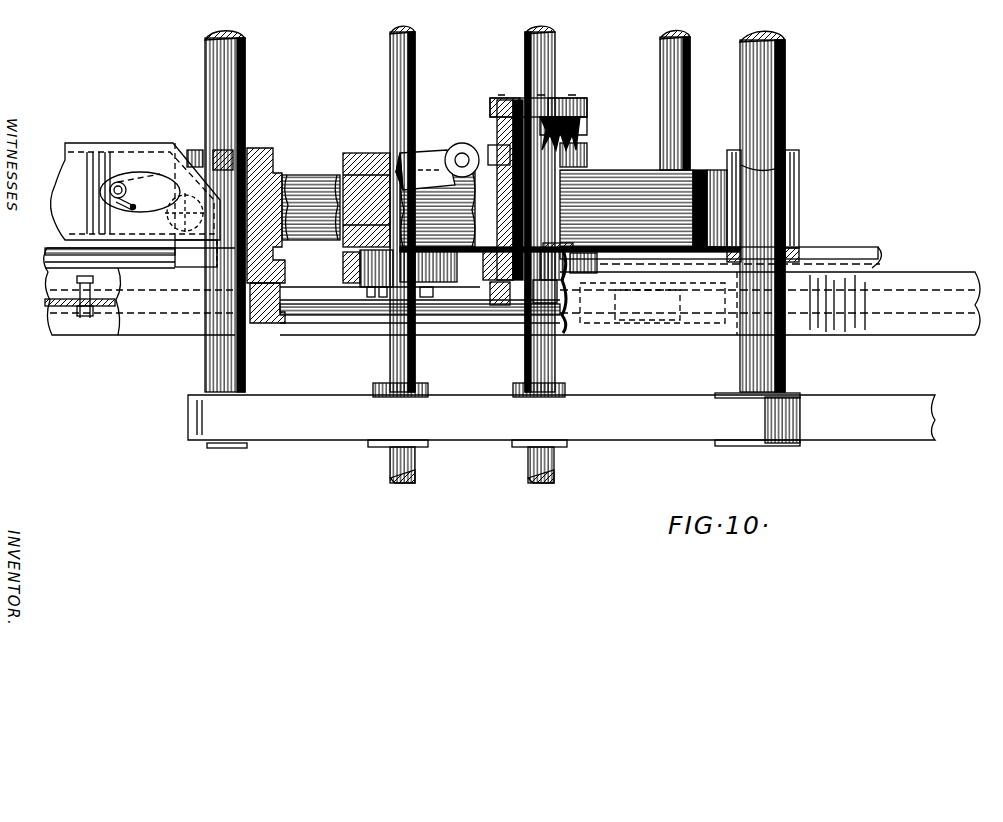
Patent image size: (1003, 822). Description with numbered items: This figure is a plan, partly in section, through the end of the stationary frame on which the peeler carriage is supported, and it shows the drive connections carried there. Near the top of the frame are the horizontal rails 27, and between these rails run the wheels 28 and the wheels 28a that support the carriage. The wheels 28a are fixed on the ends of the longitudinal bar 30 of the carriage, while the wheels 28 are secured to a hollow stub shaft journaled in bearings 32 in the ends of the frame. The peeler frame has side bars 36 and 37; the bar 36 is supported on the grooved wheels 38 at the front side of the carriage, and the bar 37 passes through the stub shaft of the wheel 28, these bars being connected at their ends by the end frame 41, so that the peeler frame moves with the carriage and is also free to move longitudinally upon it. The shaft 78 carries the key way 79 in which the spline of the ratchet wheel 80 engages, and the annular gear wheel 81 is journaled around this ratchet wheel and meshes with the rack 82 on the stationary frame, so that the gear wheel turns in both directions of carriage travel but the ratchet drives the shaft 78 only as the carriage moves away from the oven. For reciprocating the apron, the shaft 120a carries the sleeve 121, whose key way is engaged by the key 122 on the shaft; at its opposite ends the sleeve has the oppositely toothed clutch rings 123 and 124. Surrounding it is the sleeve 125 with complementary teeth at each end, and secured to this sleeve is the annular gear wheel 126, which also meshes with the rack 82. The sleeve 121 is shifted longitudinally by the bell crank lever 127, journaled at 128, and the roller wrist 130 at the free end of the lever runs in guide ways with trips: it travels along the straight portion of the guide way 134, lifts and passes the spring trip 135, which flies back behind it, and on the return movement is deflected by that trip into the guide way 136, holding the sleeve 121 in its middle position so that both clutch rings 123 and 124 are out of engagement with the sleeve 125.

The horizontal rails 27 is at (93, 330).
The wheels 28 is at (270, 322).
The wheels 28a is at (654, 328).
The longitudinal bar 30 is at (690, 46).
The bearings 32 is at (265, 150).
The side bar 36 is at (786, 106).
The side bar 37 is at (246, 82).
The grooved wheels 38 is at (800, 190).
The end frame 41 is at (478, 438).
The shaft 78 is at (389, 50).
The key way 79 is at (388, 326).
The ratchet wheel 80 is at (511, 239).
The annular gear wheel 81 is at (342, 264).
The rack 82 is at (58, 272).
The shaft 120a is at (556, 58).
The sleeve 121 is at (576, 136).
The key 122 is at (518, 98).
The clutch ring 123 is at (588, 117).
The clutch ring 124 is at (503, 308).
The sleeve 125 is at (600, 153).
The annular gear wheel 126 is at (482, 278).
The lever 127 is at (465, 142).
The journal 128 is at (447, 170).
The roller wrist 130 is at (140, 192).
The guide way 134 is at (80, 230).
The spring trip 135 is at (130, 178).
The guide way 136 is at (56, 160).